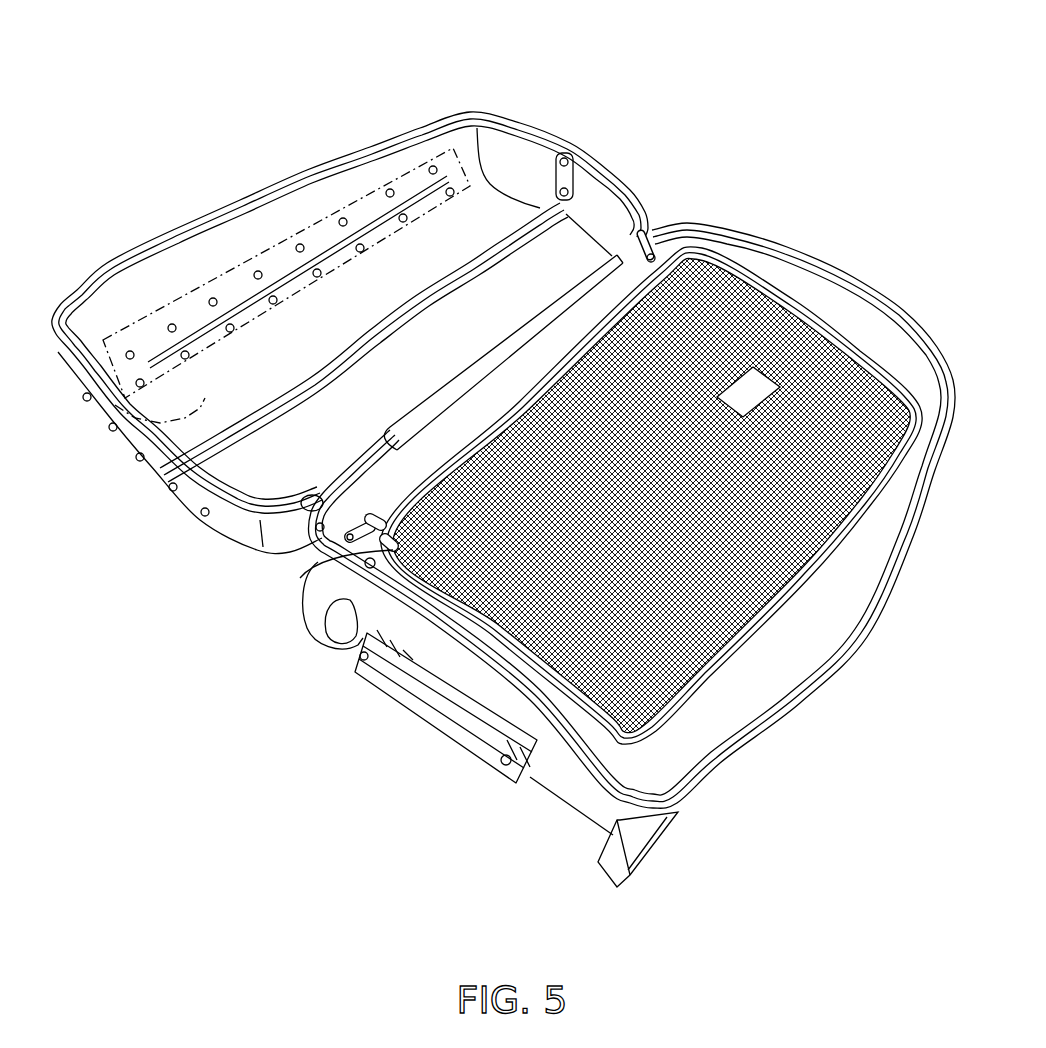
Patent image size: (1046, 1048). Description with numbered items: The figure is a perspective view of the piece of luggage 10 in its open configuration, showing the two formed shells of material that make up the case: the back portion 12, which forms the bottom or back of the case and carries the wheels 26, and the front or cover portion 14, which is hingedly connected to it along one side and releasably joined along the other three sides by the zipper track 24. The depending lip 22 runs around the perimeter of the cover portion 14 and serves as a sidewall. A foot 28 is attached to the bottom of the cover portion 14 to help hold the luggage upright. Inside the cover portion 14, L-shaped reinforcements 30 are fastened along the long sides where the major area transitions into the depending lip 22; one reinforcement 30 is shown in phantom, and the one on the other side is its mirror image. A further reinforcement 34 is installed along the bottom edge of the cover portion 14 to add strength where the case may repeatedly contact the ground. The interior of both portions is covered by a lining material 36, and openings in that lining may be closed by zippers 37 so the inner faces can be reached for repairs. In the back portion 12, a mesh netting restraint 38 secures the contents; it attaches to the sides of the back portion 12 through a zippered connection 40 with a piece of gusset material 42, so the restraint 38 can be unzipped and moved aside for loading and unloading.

The piece of luggage 10 is at (418, 68).
The back portion 12 is at (531, 794).
The front or cover portion 14 is at (210, 537).
The depending lip 22 is at (253, 232).
The zipper track 24 is at (309, 497).
The wheels 26 is at (313, 627).
The foot 28 is at (447, 717).
The L-shaped reinforcements 30 is at (352, 190).
The reinforcement 34 is at (195, 412).
The lining material 36 is at (487, 200).
The zippers 37 is at (570, 192).
The mesh netting restraint 38 is at (722, 293).
The zippered connection 40 is at (343, 550).
The gusset material 42 is at (580, 742).